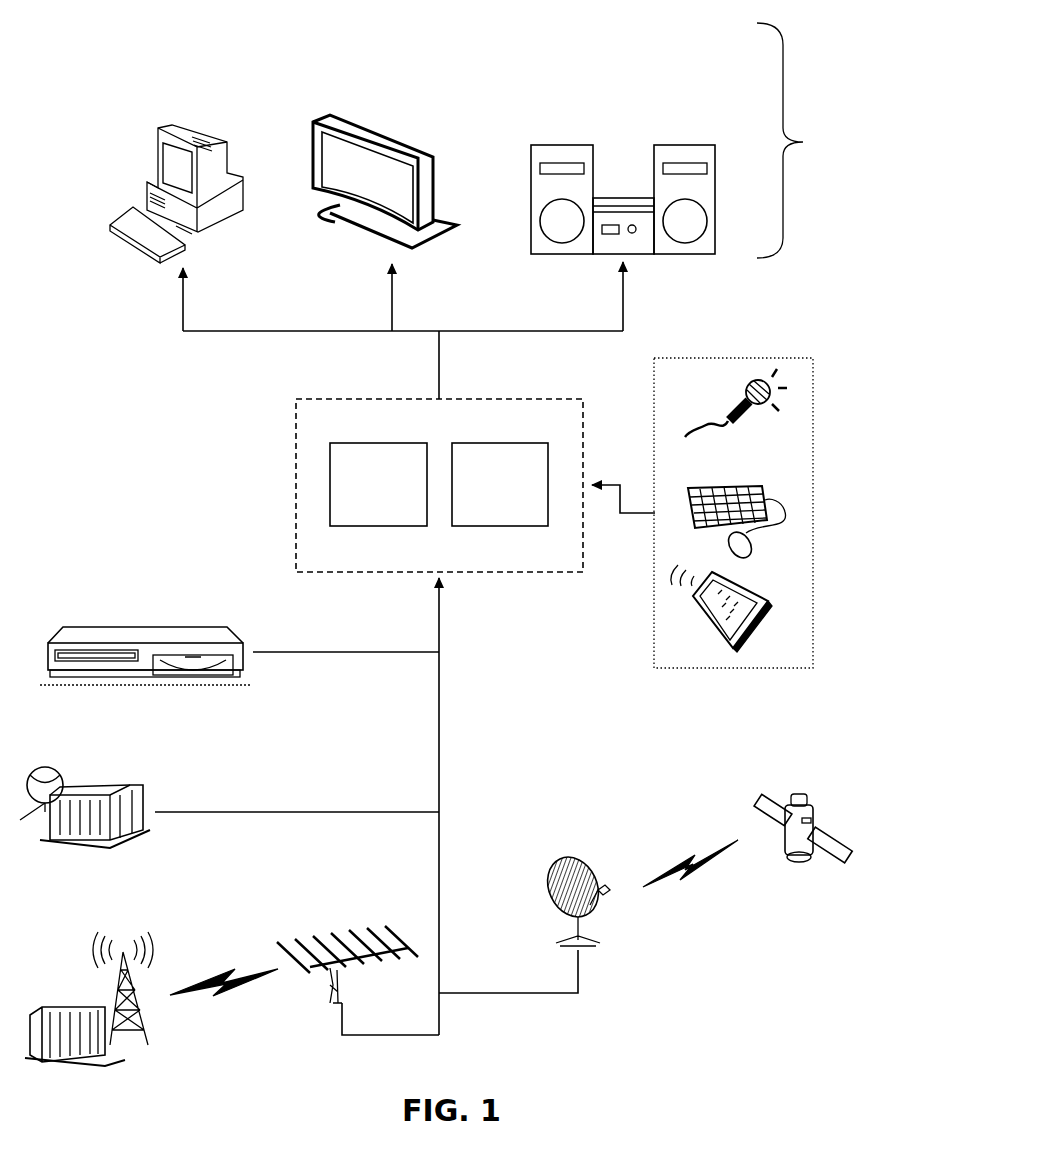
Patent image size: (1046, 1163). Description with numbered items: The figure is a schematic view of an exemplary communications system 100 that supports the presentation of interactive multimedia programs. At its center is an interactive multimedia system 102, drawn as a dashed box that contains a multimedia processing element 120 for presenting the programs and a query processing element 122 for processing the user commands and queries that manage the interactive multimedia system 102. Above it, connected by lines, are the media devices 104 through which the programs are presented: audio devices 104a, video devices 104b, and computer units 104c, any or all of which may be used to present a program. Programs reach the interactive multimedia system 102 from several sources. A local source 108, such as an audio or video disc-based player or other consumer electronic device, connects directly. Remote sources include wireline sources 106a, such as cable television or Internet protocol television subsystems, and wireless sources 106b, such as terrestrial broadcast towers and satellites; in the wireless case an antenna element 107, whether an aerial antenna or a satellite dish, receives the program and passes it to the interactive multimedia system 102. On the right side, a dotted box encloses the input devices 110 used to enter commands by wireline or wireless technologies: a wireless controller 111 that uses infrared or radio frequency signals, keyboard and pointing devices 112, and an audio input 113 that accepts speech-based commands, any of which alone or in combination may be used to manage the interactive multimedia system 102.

The communications system 100 is at (108, 33).
The interactive multimedia system 102 is at (374, 485).
The media devices 104 is at (805, 140).
The audio devices 104a is at (686, 141).
The video devices 104b is at (391, 107).
The computer units 104c is at (185, 114).
The wireline sources 106a is at (97, 775).
The wireless sources 106b is at (85, 1070).
The antenna element 107 is at (339, 910).
The local sources 108 is at (144, 615).
The input devices 110 is at (765, 474).
The wireless controller 111 is at (768, 603).
The keyboard and/or pointing devices 112 is at (786, 503).
The audio input 113 is at (798, 393).
The multimedia processing element 120 is at (500, 484).
The query processing element 122 is at (378, 484).